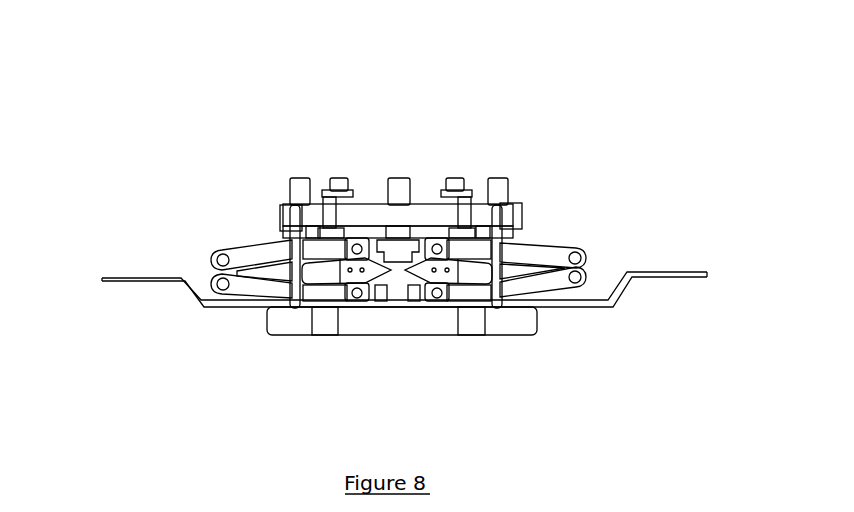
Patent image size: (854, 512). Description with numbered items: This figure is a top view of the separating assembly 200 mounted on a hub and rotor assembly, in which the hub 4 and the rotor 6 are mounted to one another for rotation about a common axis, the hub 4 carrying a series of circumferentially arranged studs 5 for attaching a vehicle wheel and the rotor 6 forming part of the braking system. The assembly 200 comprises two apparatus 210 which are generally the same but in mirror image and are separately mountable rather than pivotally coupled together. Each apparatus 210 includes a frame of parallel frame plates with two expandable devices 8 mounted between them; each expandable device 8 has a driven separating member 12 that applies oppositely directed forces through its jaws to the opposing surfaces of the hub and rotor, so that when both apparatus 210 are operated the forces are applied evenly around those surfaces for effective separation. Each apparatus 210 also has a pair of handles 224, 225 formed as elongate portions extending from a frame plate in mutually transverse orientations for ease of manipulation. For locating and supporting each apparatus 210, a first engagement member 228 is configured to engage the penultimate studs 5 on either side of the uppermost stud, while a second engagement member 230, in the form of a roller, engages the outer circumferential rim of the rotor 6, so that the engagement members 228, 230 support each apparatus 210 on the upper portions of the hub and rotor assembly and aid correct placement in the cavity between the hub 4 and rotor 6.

The assembly 200 is at (444, 86).
The apparatus 210 is at (160, 181).
The first engagement member 228 is at (324, 203).
The stud 5 is at (346, 193).
The hub 4 is at (517, 206).
The handle 225 is at (288, 222).
The expandable device 8 is at (216, 252).
The handle 224 is at (163, 283).
The rotor 6 is at (282, 330).
The second engagement member 230 is at (327, 330).
The driven separating member 12 is at (385, 274).